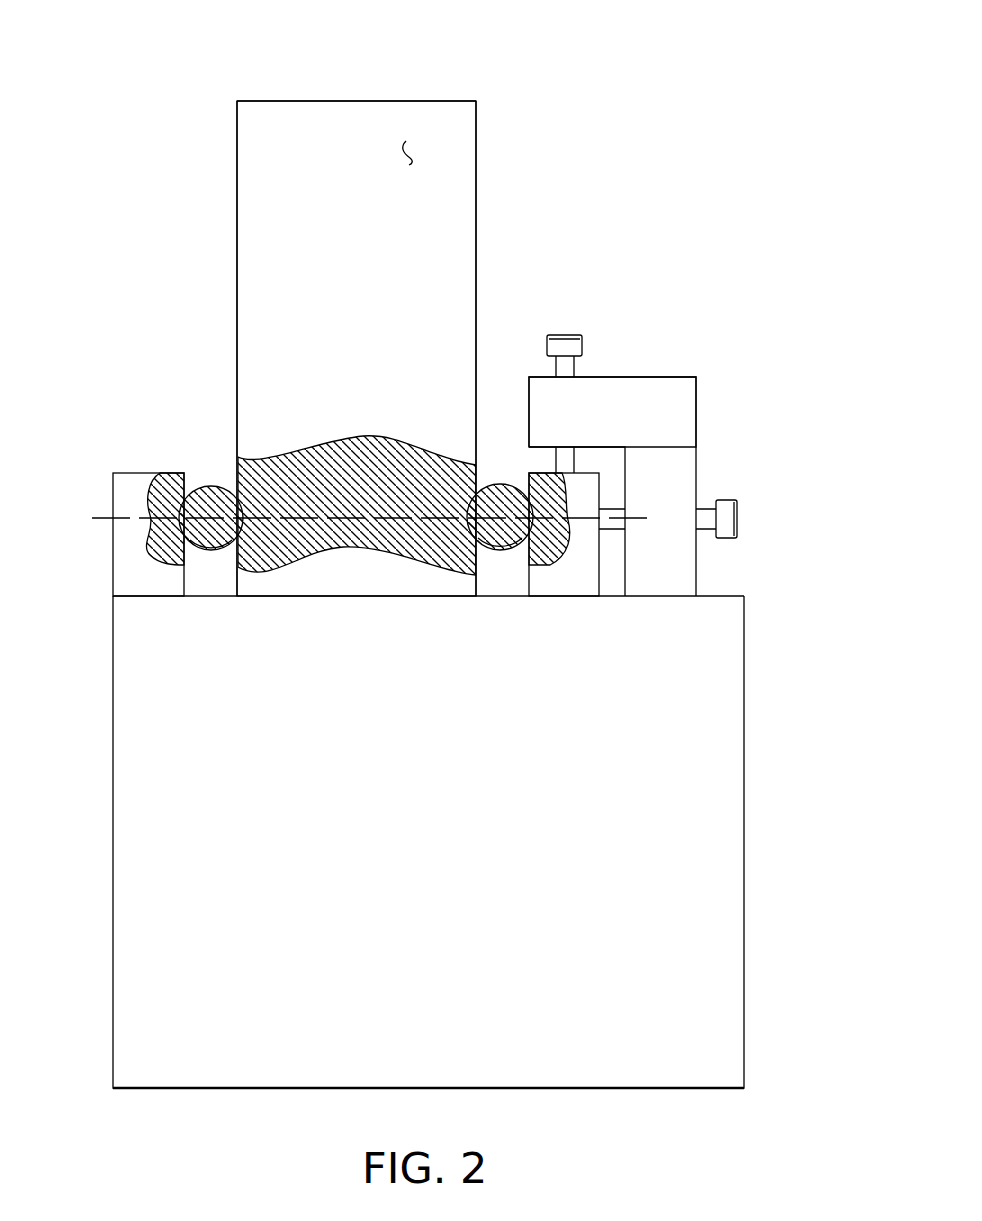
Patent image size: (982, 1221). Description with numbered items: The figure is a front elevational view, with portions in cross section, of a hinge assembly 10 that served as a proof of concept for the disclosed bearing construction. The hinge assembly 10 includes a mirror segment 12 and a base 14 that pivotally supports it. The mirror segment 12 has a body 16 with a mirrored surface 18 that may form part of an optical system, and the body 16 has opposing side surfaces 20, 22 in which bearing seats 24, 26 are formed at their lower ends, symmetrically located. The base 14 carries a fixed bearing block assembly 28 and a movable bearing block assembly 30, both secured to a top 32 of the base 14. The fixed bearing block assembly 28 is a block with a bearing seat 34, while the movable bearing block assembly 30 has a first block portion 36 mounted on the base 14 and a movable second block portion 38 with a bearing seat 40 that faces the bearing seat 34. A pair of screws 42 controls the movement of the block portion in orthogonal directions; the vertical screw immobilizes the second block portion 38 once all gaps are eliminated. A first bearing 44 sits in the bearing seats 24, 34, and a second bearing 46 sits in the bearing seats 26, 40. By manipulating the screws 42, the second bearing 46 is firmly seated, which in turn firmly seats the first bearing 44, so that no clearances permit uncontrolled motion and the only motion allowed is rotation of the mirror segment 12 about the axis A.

The hinge assembly 10 is at (592, 270).
The mirror segment 12 is at (237, 101).
The base 14 is at (650, 890).
The body 16 is at (310, 185).
The mirrored surface 18 is at (420, 147).
The side surface 20 is at (237, 240).
The side surface 22 is at (476, 185).
The bearing seat 24 is at (210, 488).
The bearing seat 26 is at (490, 487).
The fixed bearing block assembly 28 is at (130, 557).
The movable bearing block assembly 30 is at (696, 377).
The top 32 is at (744, 597).
The bearing seat 34 is at (213, 552).
The first block portion 36 is at (660, 407).
The second block portion 38 is at (573, 582).
The bearing seat 40 is at (540, 512).
The screw 42 is at (570, 337).
The first bearing 44 is at (205, 490).
The second bearing 46 is at (503, 540).
The axis A is at (102, 518).